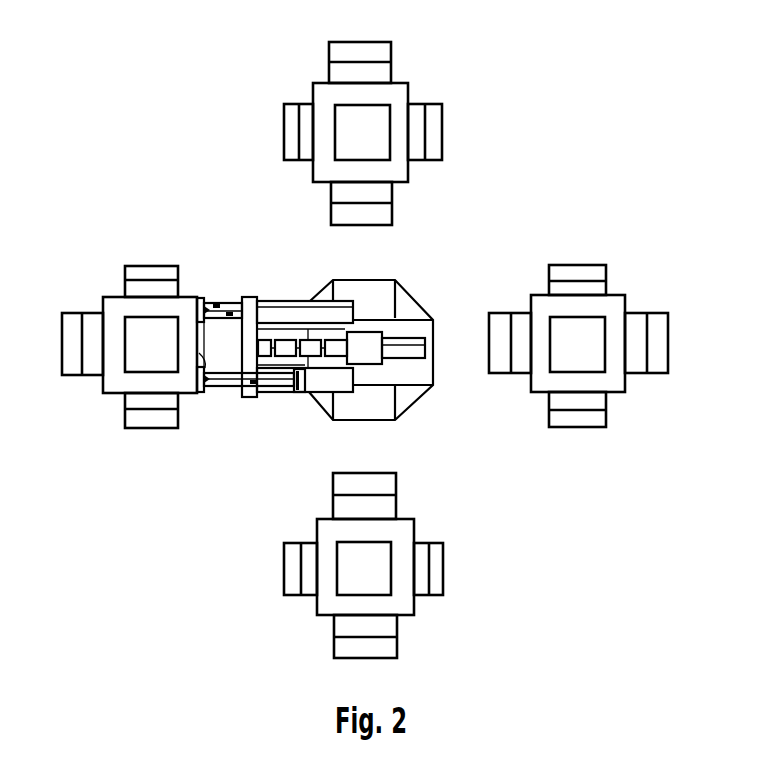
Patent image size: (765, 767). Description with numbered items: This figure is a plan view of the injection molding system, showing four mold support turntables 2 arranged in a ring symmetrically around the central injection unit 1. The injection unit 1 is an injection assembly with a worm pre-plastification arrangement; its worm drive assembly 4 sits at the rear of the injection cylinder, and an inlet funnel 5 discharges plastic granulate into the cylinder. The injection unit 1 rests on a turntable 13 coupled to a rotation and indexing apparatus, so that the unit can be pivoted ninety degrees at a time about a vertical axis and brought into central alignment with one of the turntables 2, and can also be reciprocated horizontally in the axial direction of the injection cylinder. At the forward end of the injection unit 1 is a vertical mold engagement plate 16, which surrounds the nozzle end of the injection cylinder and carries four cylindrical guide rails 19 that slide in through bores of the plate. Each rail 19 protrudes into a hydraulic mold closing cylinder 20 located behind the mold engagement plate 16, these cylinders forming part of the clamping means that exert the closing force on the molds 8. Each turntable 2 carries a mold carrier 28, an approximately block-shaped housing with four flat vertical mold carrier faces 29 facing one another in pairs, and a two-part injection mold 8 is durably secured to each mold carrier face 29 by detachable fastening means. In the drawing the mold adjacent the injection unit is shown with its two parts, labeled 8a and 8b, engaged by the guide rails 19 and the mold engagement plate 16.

The injection unit 1 is at (428, 292).
The mold support turntable 2 is at (409, 82).
The drive assembly 4 is at (410, 352).
The inlet funnel 5 is at (372, 338).
The two-part mold 8 is at (381, 41).
The coupling block portion 8a is at (217, 350).
The coupling block portion 8b is at (235, 363).
The turntable 13 is at (345, 403).
The mold engagement plate 16 is at (250, 297).
The guide rail 19 is at (215, 303).
The hydraulic mold closing cylinder 20 is at (295, 308).
The mold carrier 28 is at (110, 383).
The mold carrier face 29 is at (207, 390).